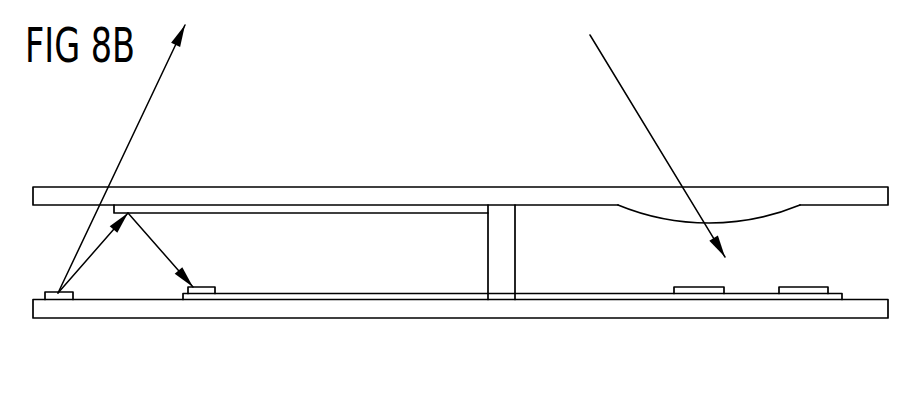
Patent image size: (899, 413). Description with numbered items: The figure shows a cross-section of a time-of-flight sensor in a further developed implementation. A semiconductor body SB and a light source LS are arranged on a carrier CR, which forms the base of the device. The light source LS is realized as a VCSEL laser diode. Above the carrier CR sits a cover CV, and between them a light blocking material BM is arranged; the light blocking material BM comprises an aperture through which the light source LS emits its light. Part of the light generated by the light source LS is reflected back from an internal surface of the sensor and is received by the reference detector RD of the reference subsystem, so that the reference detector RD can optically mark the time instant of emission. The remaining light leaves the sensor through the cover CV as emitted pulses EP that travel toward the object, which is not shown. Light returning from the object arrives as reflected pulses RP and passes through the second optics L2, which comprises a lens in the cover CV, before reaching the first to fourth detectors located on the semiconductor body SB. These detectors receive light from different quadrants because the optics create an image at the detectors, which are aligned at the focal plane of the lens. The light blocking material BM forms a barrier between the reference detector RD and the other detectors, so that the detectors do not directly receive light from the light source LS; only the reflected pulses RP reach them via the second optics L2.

The cover CV is at (843, 193).
The second optics L2 is at (730, 200).
The light blocking material BM is at (385, 220).
The semiconductor body SB is at (538, 302).
The carrier CR is at (165, 306).
The light source LS is at (52, 290).
The reference detector RD is at (205, 285).
The emitted pulses EP is at (143, 113).
The reflected pulses RP is at (647, 125).